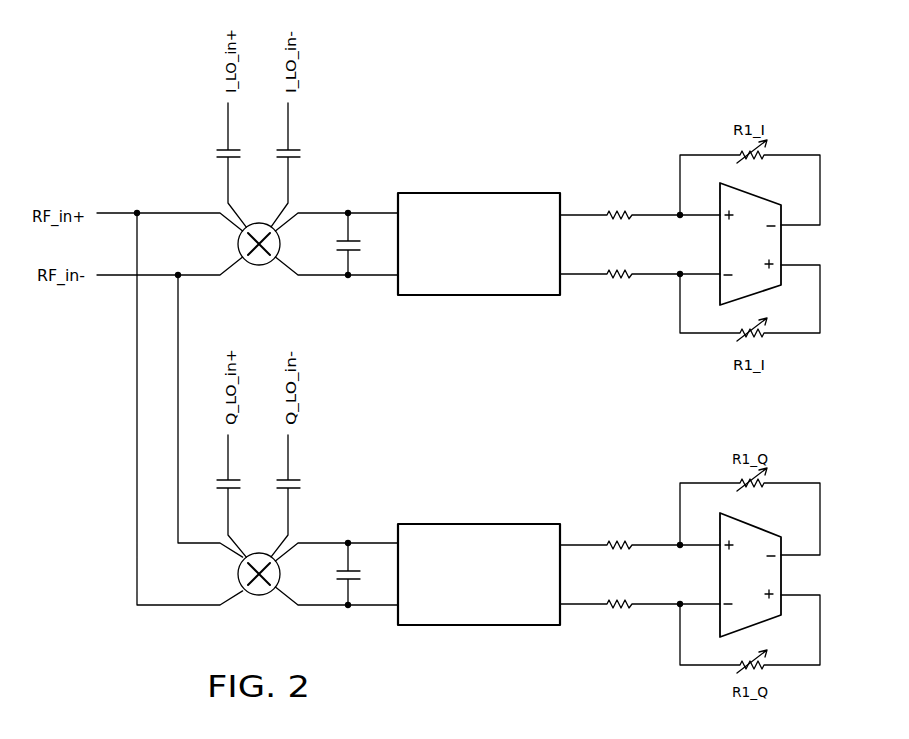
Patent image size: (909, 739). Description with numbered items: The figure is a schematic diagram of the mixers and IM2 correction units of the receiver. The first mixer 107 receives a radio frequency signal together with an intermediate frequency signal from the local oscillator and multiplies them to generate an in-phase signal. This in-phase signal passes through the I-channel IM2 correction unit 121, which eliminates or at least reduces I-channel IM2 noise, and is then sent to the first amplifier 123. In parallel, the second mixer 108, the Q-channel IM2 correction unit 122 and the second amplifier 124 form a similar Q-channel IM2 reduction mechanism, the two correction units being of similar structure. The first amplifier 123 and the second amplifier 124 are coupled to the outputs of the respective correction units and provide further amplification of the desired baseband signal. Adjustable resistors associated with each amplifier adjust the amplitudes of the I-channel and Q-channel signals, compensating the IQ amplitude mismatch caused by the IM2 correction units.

The first mixer 107 is at (253, 263).
The second mixer 108 is at (253, 593).
The I-channel IM2 correction unit 121 is at (478, 193).
The Q-channel IM2 correction unit 122 is at (478, 626).
The first amplifier 123 is at (720, 245).
The second amplifier 124 is at (720, 575).